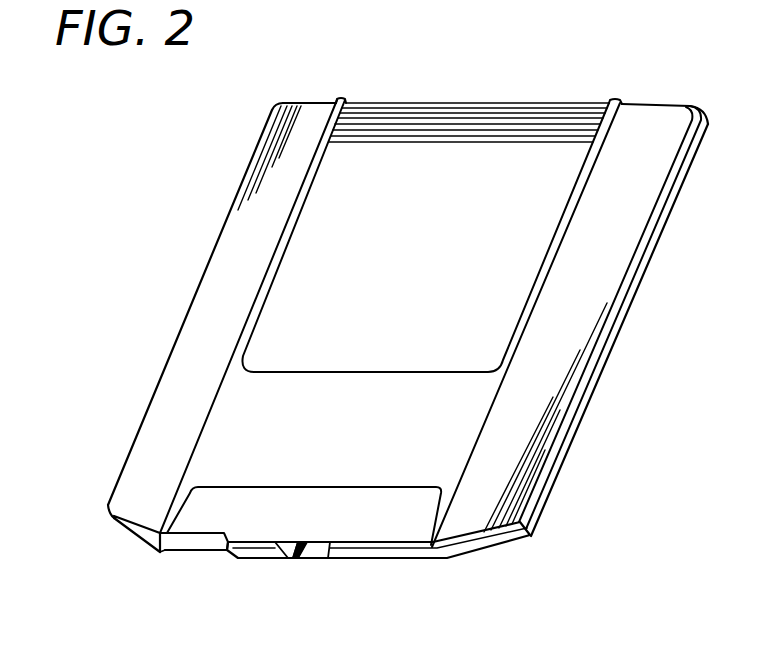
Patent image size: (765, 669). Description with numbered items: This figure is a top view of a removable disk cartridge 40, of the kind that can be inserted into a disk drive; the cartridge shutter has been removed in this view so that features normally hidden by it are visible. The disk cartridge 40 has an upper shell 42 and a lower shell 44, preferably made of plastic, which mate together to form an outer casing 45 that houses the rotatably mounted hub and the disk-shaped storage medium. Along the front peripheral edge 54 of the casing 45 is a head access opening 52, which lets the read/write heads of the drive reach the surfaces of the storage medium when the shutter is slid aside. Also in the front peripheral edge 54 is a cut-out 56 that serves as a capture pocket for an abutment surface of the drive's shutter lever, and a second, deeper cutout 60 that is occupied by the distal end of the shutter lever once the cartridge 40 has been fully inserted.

The removable disk cartridge 40 is at (217, 142).
The upper shell 42 is at (631, 272).
The lower shell 44 is at (617, 347).
The outer casing 45 is at (537, 102).
The head access opening 52 is at (305, 553).
The front peripheral edge 54 is at (384, 558).
The cut-out 56 is at (180, 555).
The second, deeper cutout 60 is at (226, 534).